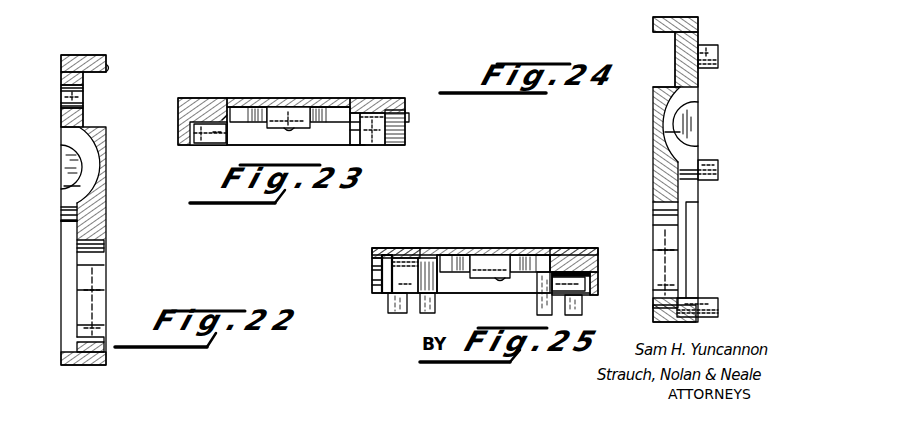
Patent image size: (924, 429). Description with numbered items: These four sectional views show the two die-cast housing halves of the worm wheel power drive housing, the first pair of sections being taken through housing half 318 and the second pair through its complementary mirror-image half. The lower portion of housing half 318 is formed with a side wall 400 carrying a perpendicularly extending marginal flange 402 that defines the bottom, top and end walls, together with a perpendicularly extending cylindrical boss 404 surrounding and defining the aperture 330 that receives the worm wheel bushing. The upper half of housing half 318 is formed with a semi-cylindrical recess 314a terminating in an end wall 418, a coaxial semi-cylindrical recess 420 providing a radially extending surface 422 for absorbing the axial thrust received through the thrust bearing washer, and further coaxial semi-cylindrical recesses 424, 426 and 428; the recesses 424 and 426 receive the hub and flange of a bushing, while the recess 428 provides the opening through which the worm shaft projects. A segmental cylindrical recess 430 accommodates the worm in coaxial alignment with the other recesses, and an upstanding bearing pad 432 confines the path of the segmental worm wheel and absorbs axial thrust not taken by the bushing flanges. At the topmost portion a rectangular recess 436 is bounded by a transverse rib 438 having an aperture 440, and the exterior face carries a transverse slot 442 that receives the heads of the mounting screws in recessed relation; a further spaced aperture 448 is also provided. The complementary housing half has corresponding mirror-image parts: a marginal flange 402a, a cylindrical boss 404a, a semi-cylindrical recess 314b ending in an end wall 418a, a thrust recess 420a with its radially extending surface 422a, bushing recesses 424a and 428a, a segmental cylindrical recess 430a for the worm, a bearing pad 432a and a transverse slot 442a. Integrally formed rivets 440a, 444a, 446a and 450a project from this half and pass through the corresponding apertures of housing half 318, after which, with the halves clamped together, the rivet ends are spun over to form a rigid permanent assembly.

In FIG. 22, the side wall 400 is at (100, 227).
In FIG. 22, the marginal flange 402 is at (78, 365).
In FIG. 23, the marginal flange 402 is at (266, 138).
In FIG. 22, the cylindrical boss 404 is at (77, 348).
In FIG. 22, the aperture 330 is at (100, 247).
In FIG. 22, the housing half 318 is at (106, 202).
In FIG. 23, the housing half 318 is at (340, 98).
In FIG. 22, the semi-cylindrical recess 314a is at (64, 186).
In FIG. 23, the semi-cylindrical recess 314a is at (228, 107).
In FIG. 22, the end wall 418 is at (66, 164).
In FIG. 23, the end wall 418 is at (192, 145).
In FIG. 22, the segmental cylindrical recess 430 is at (98, 162).
In FIG. 23, the segmental cylindrical recess 430 is at (273, 107).
In FIG. 22, the bearing pad 432 is at (61, 214).
In FIG. 23, the bearing pad 432 is at (297, 128).
In FIG. 22, the rectangular recess 436 is at (59, 60).
In FIG. 22, the transverse rib 438 is at (61, 77).
In FIG. 22, the aperture 440 is at (66, 98).
In FIG. 22, the transverse slot 442 is at (108, 70).
In FIG. 23, the semi-cylindrical recess 420 is at (352, 136).
In FIG. 23, the radially extending surface 422 is at (360, 147).
In FIG. 23, the semi-cylindrical recess 424 is at (370, 113).
In FIG. 23, the semi-cylindrical recess 426 is at (396, 110).
In FIG. 25, the semi-cylindrical recess 426 is at (387, 255).
In FIG. 23, the semi-cylindrical recess 428 is at (409, 119).
In FIG. 24, the marginal flange 402a is at (655, 325).
In FIG. 25, the marginal flange 402a is at (482, 294).
In FIG. 24, the cylindrical boss 404a is at (680, 297).
In FIG. 24, the semi-cylindrical recess 314b is at (666, 132).
In FIG. 25, the semi-cylindrical recess 314b is at (565, 256).
In FIG. 24, the end wall 418a is at (698, 123).
In FIG. 25, the end wall 418a is at (590, 283).
In FIG. 25, the semi-cylindrical recess 420a is at (447, 274).
In FIG. 25, the radially extending surface 422a is at (438, 262).
In FIG. 25, the semi-cylindrical recess 424a is at (408, 258).
In FIG. 25, the semi-cylindrical recess 428a is at (372, 272).
In FIG. 24, the segmental cylindrical recess 430a is at (665, 118).
In FIG. 25, the segmental cylindrical recess 430a is at (490, 258).
In FIG. 24, the bearing pad 432a is at (698, 186).
In FIG. 25, the bearing pad 432a is at (507, 276).
In FIG. 24, the rivet 440a is at (720, 50).
In FIG. 24, the transverse slot 442a is at (655, 86).
In FIG. 24, the rivet 444a is at (720, 160).
In FIG. 25, the rivet 444a is at (582, 306).
In FIG. 24, the rivet 446a is at (718, 305).
In FIG. 25, the rivet 446a is at (537, 303).
In FIG. 25, the aperture 448 is at (425, 313).
In FIG. 25, the rivet 450a is at (397, 313).